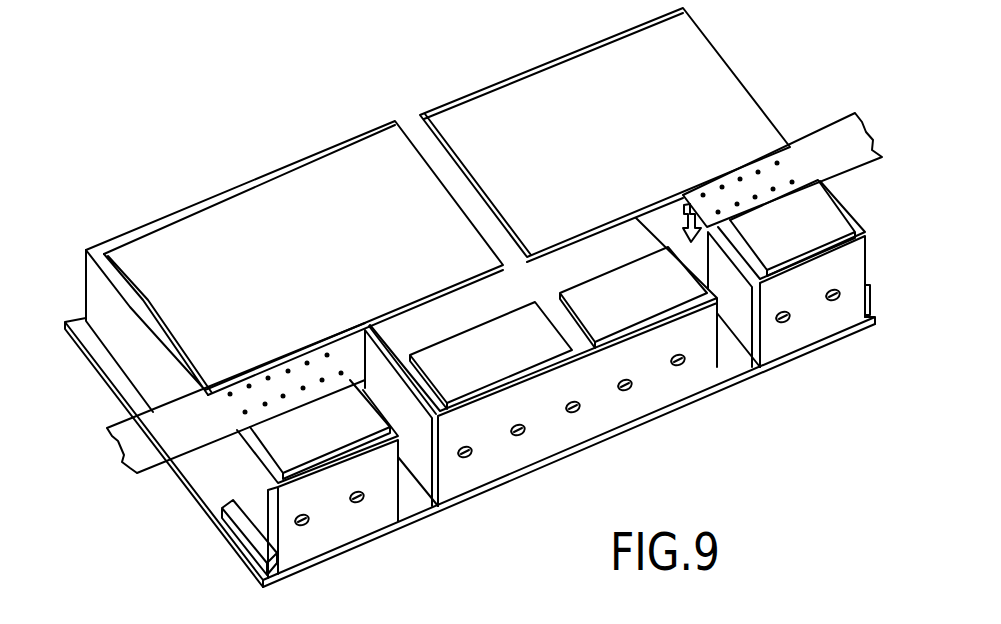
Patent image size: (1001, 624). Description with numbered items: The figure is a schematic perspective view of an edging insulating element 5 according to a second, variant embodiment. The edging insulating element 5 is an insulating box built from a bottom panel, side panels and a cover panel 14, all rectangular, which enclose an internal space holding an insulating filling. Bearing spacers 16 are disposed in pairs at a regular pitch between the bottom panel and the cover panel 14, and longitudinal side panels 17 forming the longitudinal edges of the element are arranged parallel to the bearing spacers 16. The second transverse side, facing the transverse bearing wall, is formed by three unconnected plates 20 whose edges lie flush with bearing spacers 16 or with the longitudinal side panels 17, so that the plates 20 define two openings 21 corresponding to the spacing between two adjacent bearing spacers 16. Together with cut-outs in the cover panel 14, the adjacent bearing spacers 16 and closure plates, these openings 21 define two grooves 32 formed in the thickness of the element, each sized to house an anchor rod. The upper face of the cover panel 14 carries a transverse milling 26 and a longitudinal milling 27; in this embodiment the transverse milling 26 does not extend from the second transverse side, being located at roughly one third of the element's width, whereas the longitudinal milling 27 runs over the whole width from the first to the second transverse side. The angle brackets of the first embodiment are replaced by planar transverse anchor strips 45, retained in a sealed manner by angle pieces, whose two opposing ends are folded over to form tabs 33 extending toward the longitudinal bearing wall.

The edging insulating element 5 is at (569, 455).
The cover panel 14 is at (197, 235).
The bearing spacers 16 is at (803, 322).
The longitudinal side panels 17 is at (102, 295).
The plates 20 is at (847, 257).
The openings 21 is at (762, 358).
The transverse milling 26 is at (453, 318).
The longitudinal milling 27 is at (415, 143).
The grooves 32 is at (728, 358).
The tabs 33 is at (697, 227).
The transverse anchor strips 45 is at (853, 147).